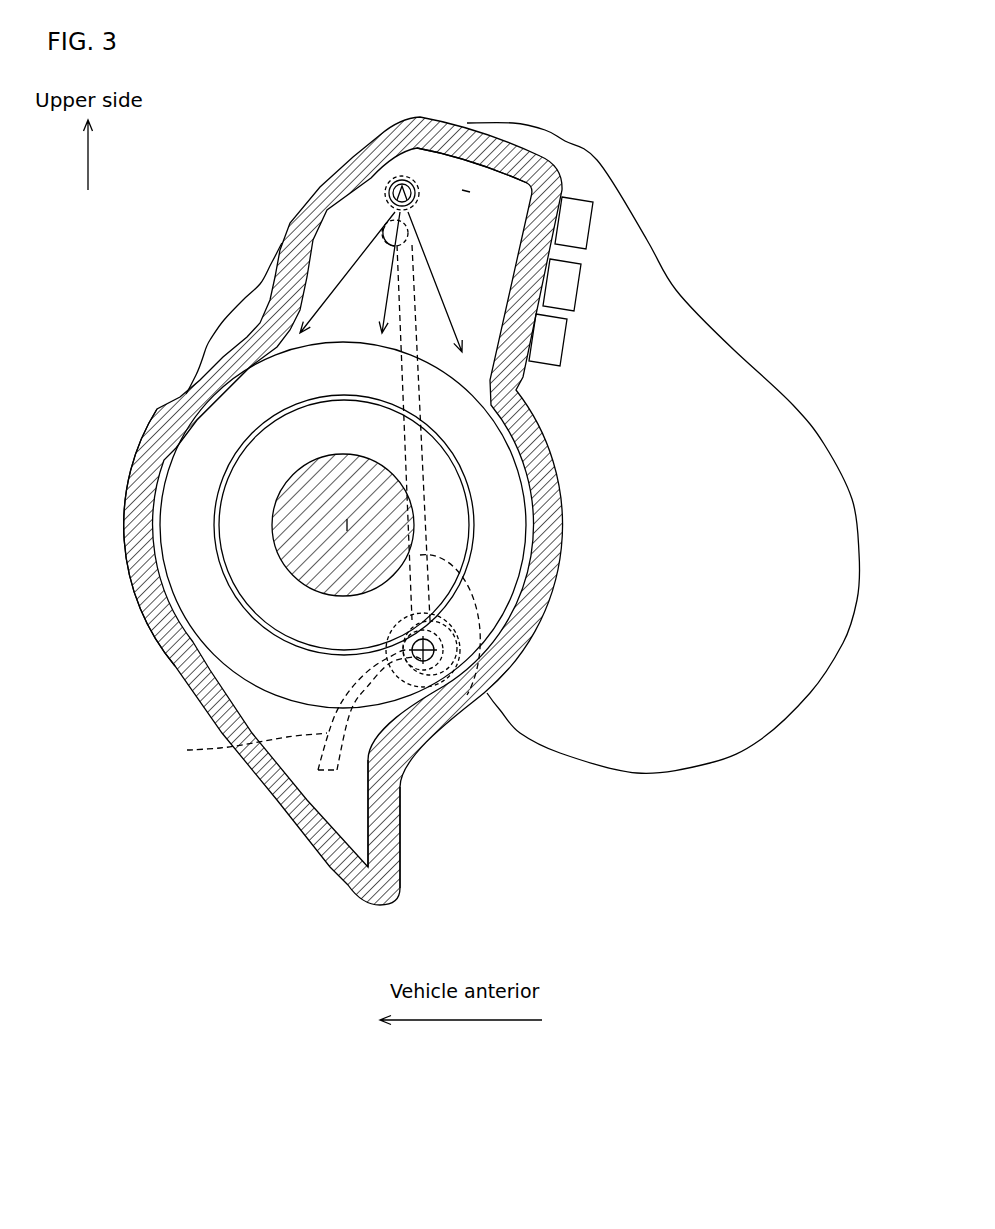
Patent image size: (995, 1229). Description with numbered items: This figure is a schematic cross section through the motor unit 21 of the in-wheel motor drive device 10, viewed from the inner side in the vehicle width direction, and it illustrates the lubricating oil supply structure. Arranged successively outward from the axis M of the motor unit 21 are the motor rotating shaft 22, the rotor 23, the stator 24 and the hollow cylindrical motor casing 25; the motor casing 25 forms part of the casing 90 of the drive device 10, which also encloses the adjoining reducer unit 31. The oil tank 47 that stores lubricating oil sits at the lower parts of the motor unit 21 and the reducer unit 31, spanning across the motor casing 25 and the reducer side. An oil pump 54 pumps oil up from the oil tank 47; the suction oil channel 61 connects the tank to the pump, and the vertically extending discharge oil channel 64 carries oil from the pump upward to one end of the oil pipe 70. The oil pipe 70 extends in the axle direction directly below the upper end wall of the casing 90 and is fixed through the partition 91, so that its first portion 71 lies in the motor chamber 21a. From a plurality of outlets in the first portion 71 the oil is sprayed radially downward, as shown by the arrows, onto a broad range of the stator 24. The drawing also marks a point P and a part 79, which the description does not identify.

The in-wheel motor drive device 10 is at (294, 150).
The motor unit 21 is at (278, 231).
The motor chamber 21a is at (489, 274).
The motor rotating shaft 22 is at (273, 532).
The rotor 23 is at (262, 456).
The stator 24 is at (227, 413).
The motor casing 25 is at (125, 537).
The casing 90 is at (160, 617).
The reducer unit 31 is at (779, 428).
The oil tank 47 is at (355, 817).
The oil pump 54 is at (413, 722).
The suction oil channel 61 is at (245, 747).
The discharge oil channel 64 is at (480, 690).
The oil pipe 70 is at (411, 162).
The first portion 71 is at (393, 185).
The upper wall portion 79 is at (422, 180).
The partition 91 is at (470, 191).
The axis M is at (345, 525).
The pivot point P is at (427, 654).